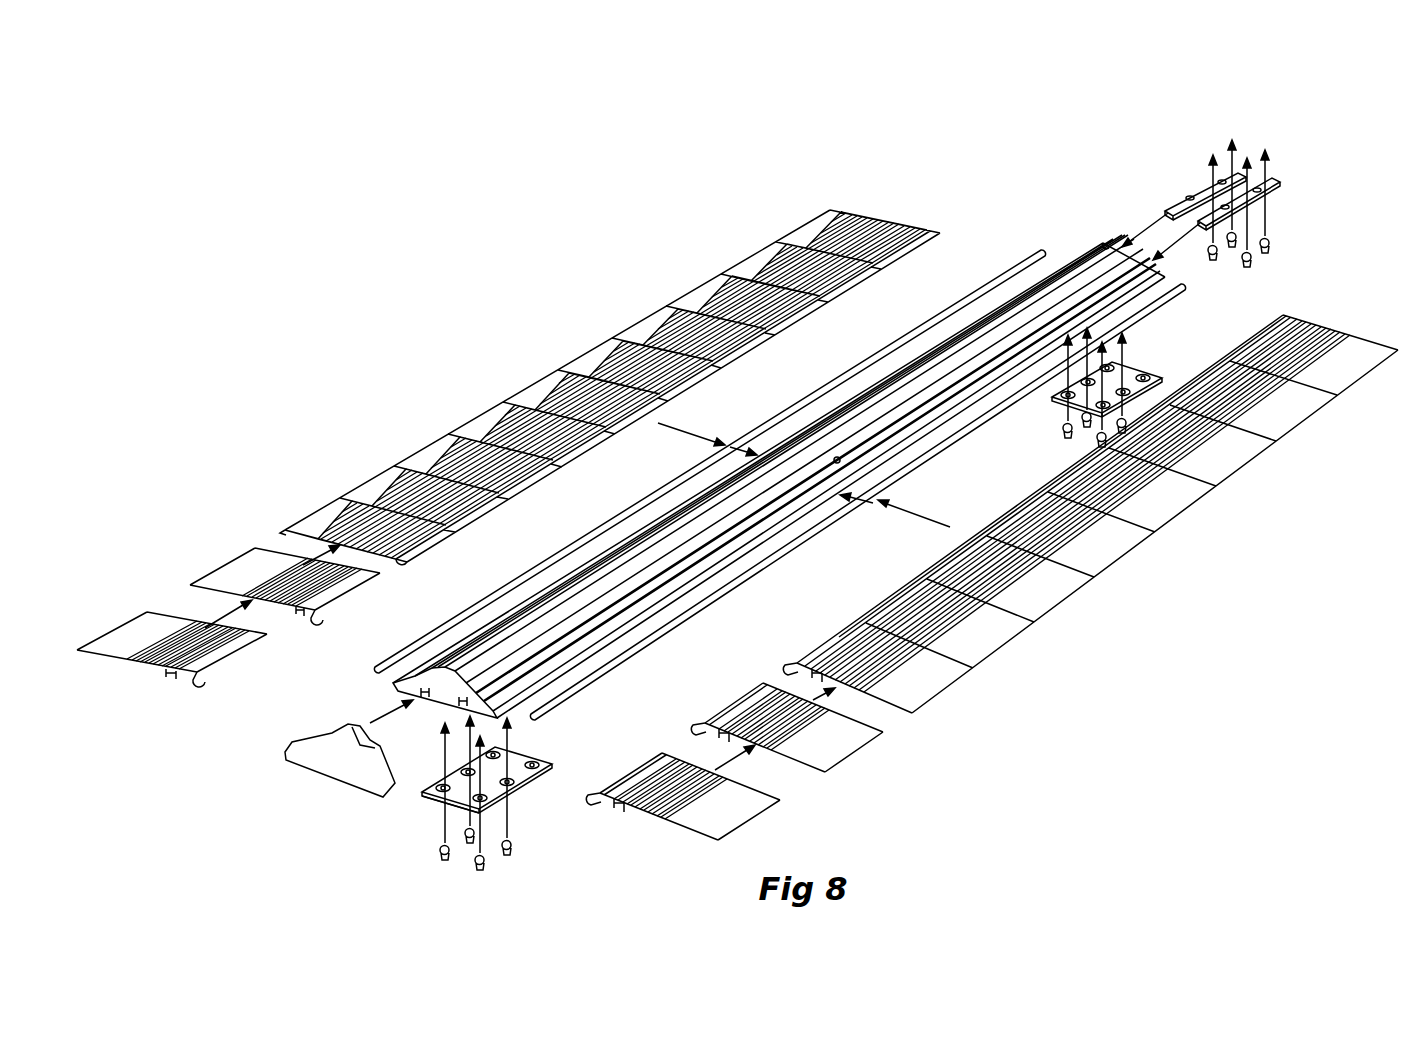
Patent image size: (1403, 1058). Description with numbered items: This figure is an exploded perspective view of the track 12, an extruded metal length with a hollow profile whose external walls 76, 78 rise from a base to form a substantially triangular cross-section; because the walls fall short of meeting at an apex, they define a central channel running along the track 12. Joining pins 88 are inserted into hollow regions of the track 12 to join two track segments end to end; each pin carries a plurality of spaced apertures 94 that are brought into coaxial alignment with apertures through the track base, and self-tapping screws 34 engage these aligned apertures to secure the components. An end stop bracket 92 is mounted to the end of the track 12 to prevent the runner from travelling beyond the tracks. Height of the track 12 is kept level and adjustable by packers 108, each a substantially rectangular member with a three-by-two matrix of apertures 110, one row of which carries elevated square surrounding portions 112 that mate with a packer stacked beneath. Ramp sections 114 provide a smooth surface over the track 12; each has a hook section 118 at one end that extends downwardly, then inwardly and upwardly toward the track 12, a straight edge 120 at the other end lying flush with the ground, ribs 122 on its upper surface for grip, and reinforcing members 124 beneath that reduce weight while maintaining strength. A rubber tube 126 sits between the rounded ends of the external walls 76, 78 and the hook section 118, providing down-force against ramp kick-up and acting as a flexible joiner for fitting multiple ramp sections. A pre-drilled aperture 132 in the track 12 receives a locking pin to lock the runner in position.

The track 12 is at (779, 451).
The self-tapping screws 34 is at (487, 860).
The external wall 76 is at (653, 532).
The external wall 78 is at (693, 543).
The joining pins 88 is at (1188, 203).
The end stop bracket 92 is at (300, 766).
The apertures 94 is at (1214, 153).
The packer 108 is at (805, 586).
The apertures 110 is at (438, 805).
The elevated square surrounding portions 112 is at (527, 792).
The ramp section 114 is at (213, 558).
The hook section 118 is at (903, 582).
The straight edge 120 is at (243, 547).
The ribs 122 is at (288, 530).
The reinforcing members 124 is at (160, 670).
The rubber tube 126 is at (483, 605).
The aperture 132 is at (835, 458).